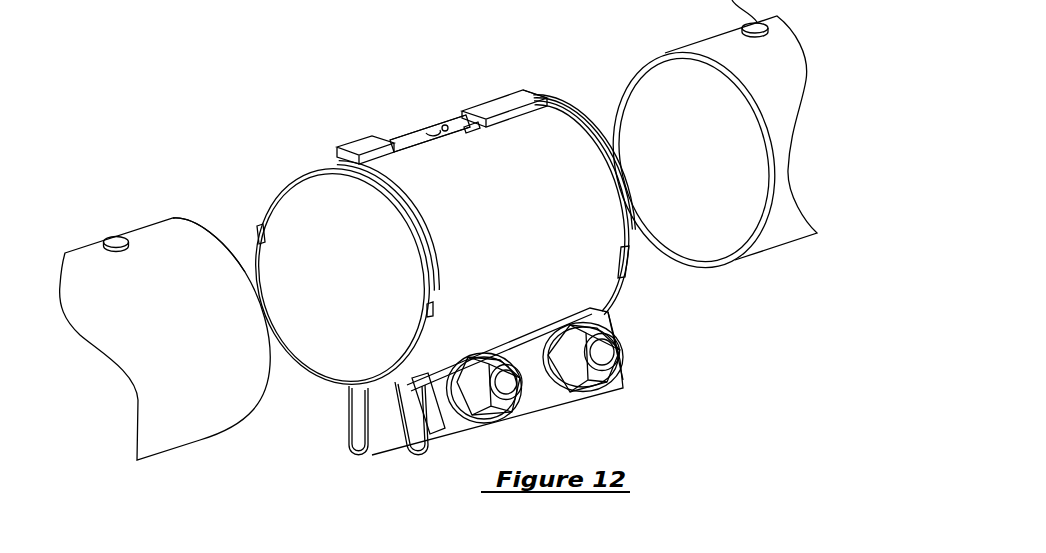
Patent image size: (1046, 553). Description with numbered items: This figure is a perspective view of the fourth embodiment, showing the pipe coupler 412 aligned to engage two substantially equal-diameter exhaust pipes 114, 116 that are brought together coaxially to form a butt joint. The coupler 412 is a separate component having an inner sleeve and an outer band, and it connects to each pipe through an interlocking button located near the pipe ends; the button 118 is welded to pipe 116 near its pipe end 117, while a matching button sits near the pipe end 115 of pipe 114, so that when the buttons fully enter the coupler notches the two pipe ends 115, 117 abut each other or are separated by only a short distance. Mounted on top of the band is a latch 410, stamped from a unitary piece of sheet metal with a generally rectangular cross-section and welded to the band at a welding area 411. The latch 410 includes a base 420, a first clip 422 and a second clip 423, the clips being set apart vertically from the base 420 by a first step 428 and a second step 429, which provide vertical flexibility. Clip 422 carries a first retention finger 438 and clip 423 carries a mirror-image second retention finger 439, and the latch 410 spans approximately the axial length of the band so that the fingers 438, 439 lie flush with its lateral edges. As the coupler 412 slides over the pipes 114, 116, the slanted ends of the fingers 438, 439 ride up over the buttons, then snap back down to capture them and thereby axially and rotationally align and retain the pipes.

The pipe 114 is at (763, 252).
The pipe end 115 is at (753, 117).
The pipe 116 is at (200, 436).
The pipe end 117 is at (208, 226).
The button 118 is at (115, 237).
The latch 410 is at (498, 93).
The welding area 411 is at (443, 125).
The pipe coupler 412 is at (378, 126).
The base 420 is at (432, 121).
The first clip 422 is at (360, 147).
The second clip 423 is at (480, 108).
The first step 428 is at (433, 135).
The second step 429 is at (471, 130).
The first retention finger 438 is at (347, 170).
The second retention finger 439 is at (553, 106).